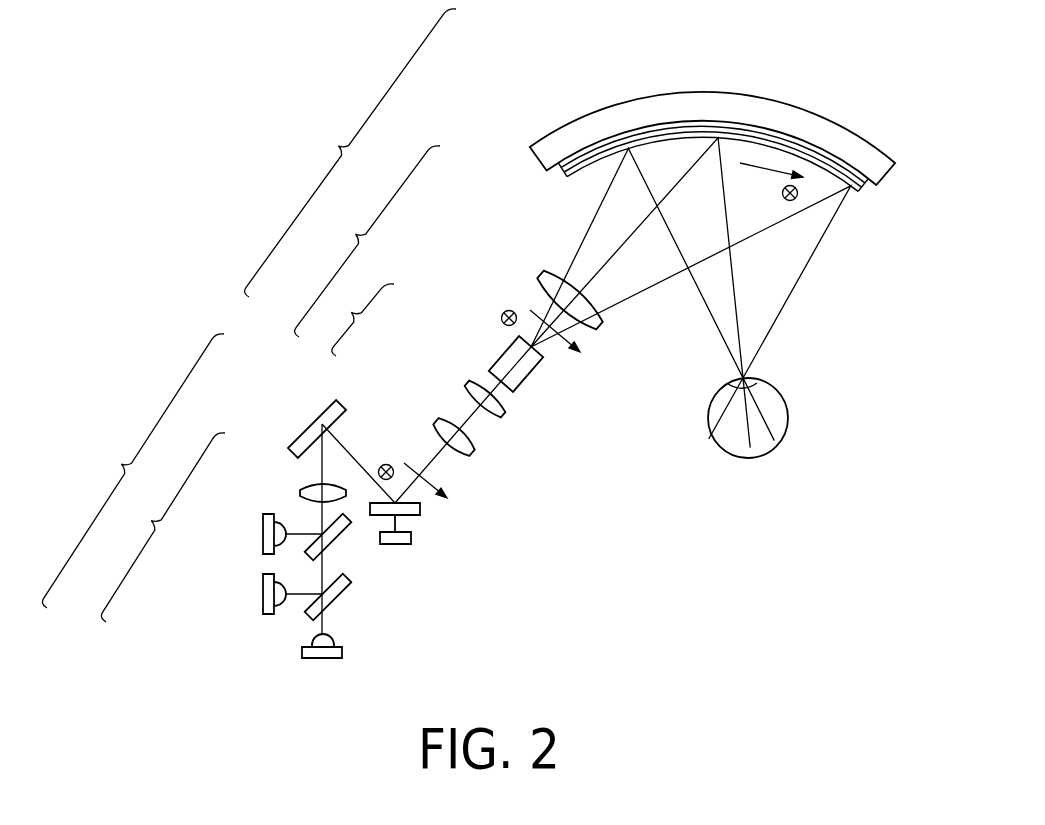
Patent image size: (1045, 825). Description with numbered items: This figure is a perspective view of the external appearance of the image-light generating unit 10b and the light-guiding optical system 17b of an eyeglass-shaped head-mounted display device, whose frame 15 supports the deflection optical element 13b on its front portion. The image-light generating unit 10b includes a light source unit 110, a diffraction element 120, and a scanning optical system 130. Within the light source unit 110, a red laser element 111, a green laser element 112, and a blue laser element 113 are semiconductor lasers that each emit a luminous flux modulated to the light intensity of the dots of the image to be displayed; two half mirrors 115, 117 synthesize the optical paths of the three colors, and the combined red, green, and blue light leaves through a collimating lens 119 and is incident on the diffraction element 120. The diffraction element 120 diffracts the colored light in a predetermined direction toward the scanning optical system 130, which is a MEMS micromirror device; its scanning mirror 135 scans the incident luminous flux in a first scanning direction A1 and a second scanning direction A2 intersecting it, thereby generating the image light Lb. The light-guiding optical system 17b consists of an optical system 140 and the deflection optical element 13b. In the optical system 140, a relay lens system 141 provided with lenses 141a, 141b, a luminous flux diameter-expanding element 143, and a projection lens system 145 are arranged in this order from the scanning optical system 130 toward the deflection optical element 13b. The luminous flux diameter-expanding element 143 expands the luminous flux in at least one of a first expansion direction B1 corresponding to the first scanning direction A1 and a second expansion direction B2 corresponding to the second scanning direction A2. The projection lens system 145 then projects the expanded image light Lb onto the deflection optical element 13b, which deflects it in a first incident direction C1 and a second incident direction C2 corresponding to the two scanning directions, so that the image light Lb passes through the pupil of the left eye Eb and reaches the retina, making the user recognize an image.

The frame 15 is at (703, 96).
The deflection optical element 13b is at (875, 201).
The light-guiding optical system 17b is at (424, 232).
The optical system 140 is at (449, 301).
The projection lens system 145 is at (542, 273).
The luminous flux diameter-expanding element 143 is at (497, 338).
The relay lens system 141 is at (413, 370).
The lens 141a is at (437, 420).
The lens 141b is at (469, 384).
The diffraction element 120 is at (310, 423).
The scanning optical system 130 is at (418, 550).
The scanning mirror 135 is at (422, 510).
The light source unit 110 is at (226, 545).
The collimating lens 119 is at (300, 490).
The blue laser element 113 is at (263, 530).
The half mirror 117 is at (310, 557).
The green laser element 112 is at (263, 593).
The half mirror 115 is at (307, 617).
The red laser element 111 is at (302, 651).
The image-light generating unit 10b is at (577, 546).
The left eye Eb is at (788, 414).
The first incident direction C1 is at (783, 197).
The second incident direction C2 is at (746, 165).
The first expansion direction B1 is at (507, 309).
The second expansion direction B2 is at (564, 350).
The first scanning direction A1 is at (380, 466).
The second scanning direction A2 is at (438, 491).
The image light Lb is at (441, 450).